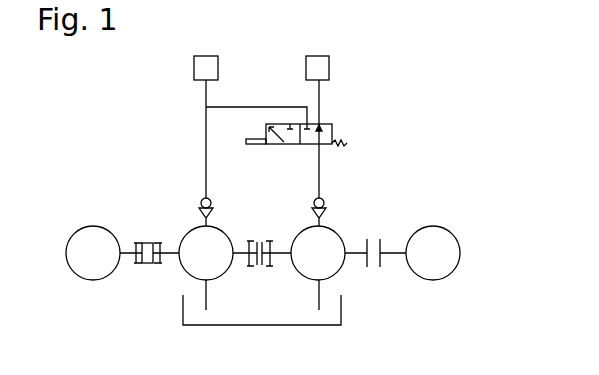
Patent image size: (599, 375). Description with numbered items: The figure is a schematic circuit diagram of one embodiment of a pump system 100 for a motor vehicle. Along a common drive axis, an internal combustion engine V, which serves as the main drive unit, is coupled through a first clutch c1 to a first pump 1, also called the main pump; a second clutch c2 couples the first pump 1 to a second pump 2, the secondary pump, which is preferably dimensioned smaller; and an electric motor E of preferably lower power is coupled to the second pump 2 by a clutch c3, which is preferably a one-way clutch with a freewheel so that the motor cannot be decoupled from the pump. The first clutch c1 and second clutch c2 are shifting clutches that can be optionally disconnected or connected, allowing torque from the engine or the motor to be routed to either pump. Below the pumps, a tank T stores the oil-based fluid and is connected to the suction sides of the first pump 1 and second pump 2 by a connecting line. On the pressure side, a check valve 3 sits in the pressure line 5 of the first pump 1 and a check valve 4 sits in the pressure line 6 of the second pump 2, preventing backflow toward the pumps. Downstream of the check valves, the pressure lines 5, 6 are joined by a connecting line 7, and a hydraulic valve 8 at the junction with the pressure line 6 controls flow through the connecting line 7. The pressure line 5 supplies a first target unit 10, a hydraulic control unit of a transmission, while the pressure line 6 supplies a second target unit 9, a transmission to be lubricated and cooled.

The pump system 100 is at (382, 128).
The first target unit 10 is at (206, 68).
The second target unit 9 is at (317, 68).
The pressure line 5 is at (206, 133).
The pressure line 6 is at (319, 100).
The connecting line 7 is at (277, 106).
The hydraulic valve 8 is at (333, 124).
The check valve 3 is at (201, 200).
The check valve 4 is at (325, 201).
The first pump 1 is at (206, 268).
The second pump 2 is at (318, 268).
The internal combustion engine V is at (93, 253).
The electric motor E is at (433, 253).
The first clutch c1 is at (139, 242).
The second clutch c2 is at (257, 241).
The clutch c3 is at (369, 239).
The tank T is at (183, 325).